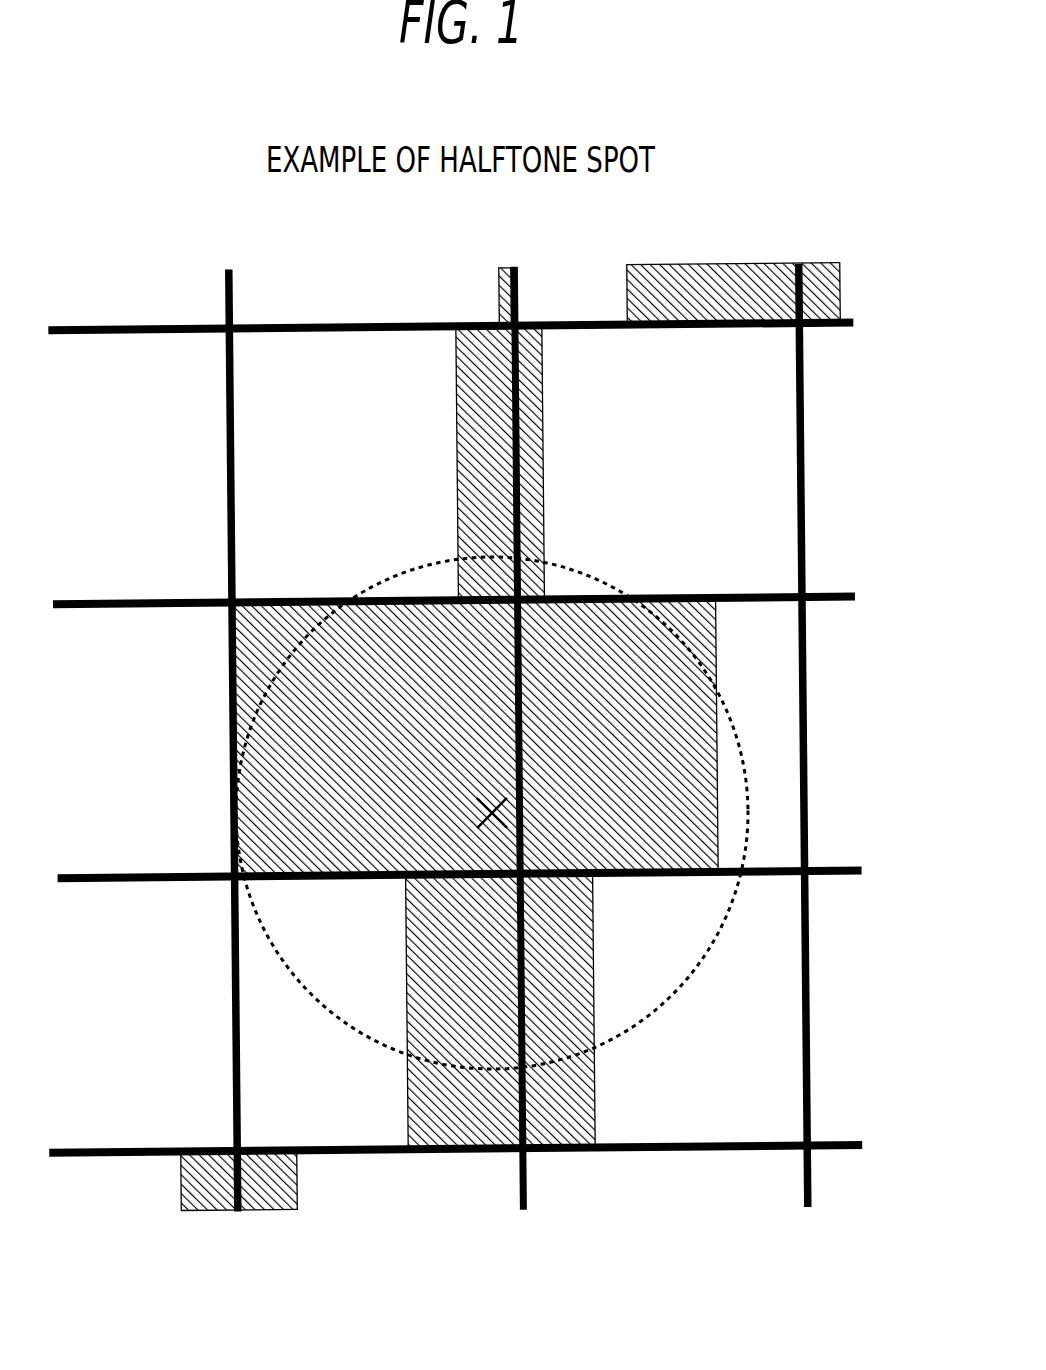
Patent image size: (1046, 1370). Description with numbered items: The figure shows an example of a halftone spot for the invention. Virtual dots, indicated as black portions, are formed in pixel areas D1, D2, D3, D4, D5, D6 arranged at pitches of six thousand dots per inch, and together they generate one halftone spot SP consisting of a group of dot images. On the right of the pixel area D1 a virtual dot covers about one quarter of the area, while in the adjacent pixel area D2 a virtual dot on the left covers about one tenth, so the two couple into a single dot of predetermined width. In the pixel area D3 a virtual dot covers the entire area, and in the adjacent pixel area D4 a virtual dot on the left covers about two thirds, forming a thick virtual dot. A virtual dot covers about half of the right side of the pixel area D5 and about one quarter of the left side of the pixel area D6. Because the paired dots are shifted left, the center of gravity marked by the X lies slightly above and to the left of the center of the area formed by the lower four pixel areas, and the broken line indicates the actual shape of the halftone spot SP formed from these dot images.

The pixel area D1 is at (441, 435).
The pixel area D2 is at (734, 377).
The pixel area D3 is at (232, 688).
The pixel area D4 is at (807, 673).
The pixel area D5 is at (387, 1041).
The pixel area D6 is at (624, 1010).
The halftone spot SP is at (731, 922).